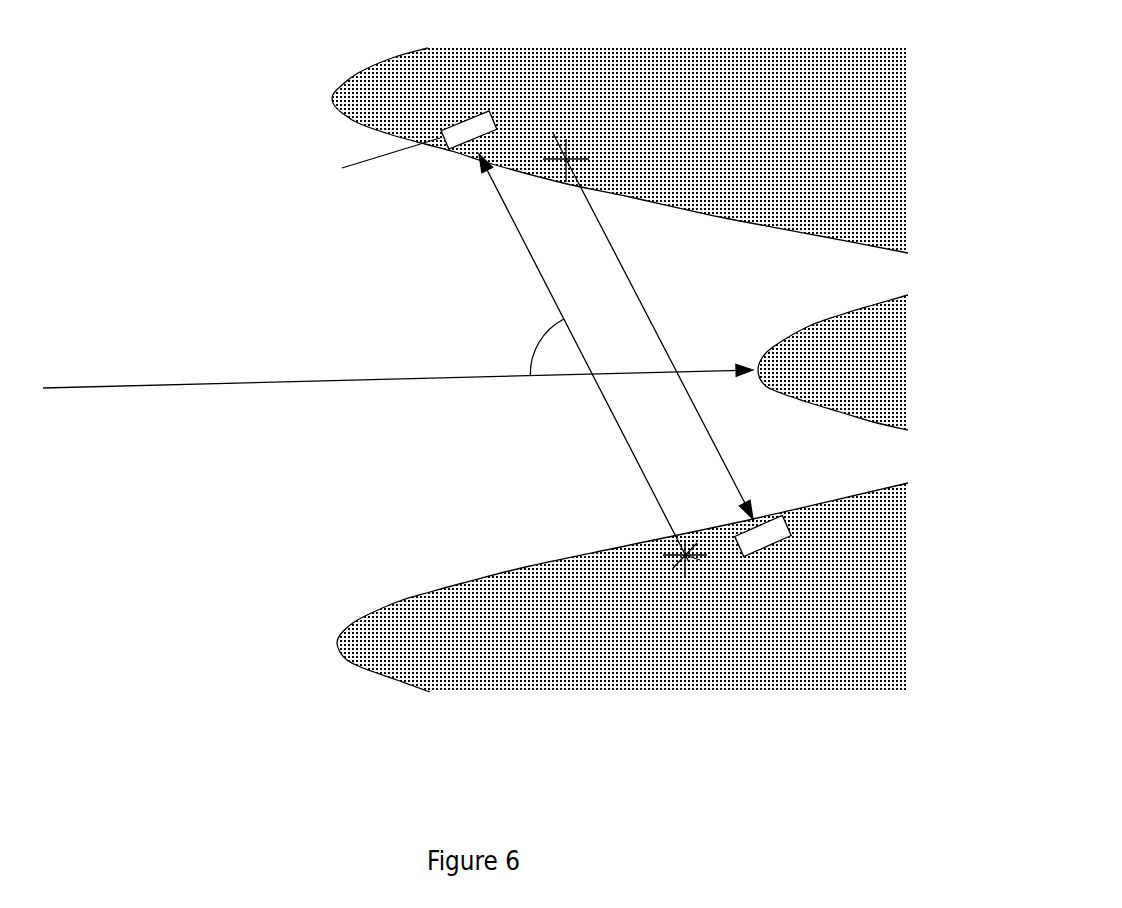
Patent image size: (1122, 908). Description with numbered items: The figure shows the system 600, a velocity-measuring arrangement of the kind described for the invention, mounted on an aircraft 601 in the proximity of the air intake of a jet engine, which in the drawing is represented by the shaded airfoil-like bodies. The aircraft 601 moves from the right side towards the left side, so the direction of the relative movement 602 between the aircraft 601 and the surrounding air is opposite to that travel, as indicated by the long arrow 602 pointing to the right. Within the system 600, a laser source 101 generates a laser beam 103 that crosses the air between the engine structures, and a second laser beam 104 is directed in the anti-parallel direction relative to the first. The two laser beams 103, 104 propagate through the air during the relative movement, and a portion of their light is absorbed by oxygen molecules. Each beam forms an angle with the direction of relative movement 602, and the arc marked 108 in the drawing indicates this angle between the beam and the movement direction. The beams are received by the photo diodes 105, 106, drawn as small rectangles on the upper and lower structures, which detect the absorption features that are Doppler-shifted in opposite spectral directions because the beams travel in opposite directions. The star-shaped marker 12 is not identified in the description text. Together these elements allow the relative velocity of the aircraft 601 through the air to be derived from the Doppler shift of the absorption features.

The system 600 is at (268, 282).
The aircraft 601 is at (822, 207).
The direction of the relative movement 602 is at (332, 387).
The photo diode 105 is at (383, 155).
The photo diode 106 is at (763, 548).
The first reflection point 12 is at (549, 173).
The laser source 101 is at (685, 555).
The laser beam 103 is at (497, 198).
The laser beam 104 is at (643, 303).
The laser beam 108 is at (553, 353).